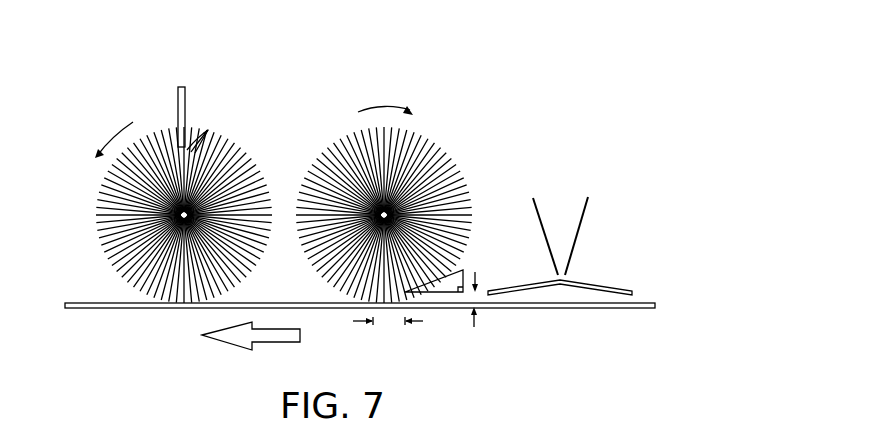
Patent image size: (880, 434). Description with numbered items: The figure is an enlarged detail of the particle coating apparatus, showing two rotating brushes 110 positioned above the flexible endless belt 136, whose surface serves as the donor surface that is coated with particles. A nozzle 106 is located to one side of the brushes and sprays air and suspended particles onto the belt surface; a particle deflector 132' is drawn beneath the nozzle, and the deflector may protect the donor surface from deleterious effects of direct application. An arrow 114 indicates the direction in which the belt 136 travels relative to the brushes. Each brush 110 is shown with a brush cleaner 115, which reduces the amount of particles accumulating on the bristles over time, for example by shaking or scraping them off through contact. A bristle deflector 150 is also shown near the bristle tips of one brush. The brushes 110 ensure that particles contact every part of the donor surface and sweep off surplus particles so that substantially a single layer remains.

The rotating brushes 110 is at (326, 92).
The brush cleaner 115 is at (180, 110).
The nozzle 106 is at (542, 212).
The bristle deflection triangle 150 is at (463, 270).
The bent workpiece 132' is at (583, 270).
The flexible endless belt 136 is at (528, 308).
The conveying direction arrow 114 is at (300, 337).